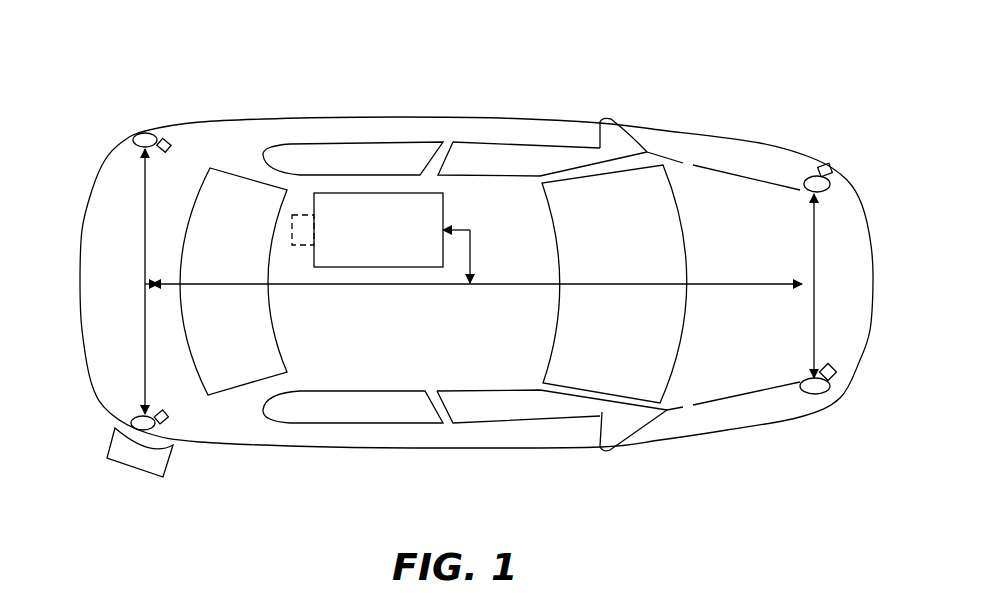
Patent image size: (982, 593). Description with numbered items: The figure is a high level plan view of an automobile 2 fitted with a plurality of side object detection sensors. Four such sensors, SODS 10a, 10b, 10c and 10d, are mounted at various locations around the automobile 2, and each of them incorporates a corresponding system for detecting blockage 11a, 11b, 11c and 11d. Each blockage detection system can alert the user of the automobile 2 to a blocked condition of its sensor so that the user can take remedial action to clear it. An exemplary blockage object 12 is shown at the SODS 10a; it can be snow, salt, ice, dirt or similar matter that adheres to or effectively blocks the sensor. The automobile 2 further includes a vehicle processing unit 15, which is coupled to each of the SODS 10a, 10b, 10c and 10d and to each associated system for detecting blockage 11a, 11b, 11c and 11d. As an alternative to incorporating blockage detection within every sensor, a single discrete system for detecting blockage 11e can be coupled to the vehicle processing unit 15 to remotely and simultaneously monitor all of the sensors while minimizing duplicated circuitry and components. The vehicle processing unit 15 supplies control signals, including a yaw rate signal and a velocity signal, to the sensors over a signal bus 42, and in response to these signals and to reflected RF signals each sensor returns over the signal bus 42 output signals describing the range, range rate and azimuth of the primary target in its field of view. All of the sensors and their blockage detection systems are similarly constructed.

The automobile 2 is at (178, 52).
The SODS 10a is at (132, 421).
The SODS 10b is at (142, 133).
The SODS 10c is at (802, 182).
The SODS 10d is at (812, 393).
The system for detecting blockage 11a is at (170, 413).
The system for detecting blockage 11b is at (167, 139).
The system for detecting blockage 11c is at (829, 162).
The system for detecting blockage 11d is at (841, 377).
The single discrete system for detecting blockage 11e is at (302, 218).
The blockage object 12 is at (130, 460).
The vehicle processing unit 15 is at (386, 200).
The signal bus 42 is at (530, 283).